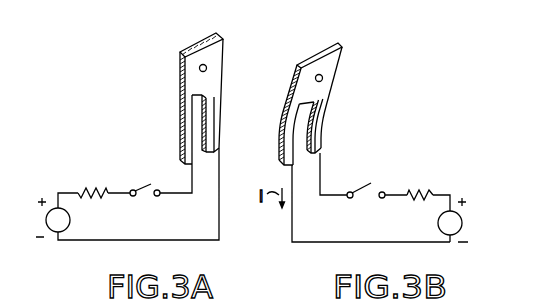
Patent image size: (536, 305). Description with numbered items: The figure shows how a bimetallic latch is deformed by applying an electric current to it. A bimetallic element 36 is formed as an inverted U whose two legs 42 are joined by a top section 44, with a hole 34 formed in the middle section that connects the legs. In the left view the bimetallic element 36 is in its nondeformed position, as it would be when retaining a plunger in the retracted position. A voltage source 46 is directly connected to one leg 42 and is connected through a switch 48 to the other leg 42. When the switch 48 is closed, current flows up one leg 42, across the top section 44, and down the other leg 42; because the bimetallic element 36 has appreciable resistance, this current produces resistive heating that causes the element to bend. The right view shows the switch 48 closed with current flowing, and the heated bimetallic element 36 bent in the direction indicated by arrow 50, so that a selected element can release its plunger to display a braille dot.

In FIG. 3A, the hole 34 is at (207, 68).
In FIG. 3B, the hole 34 is at (323, 78).
In FIG. 3A, the bimetallic element 36 is at (196, 90).
In FIG. 3B, the bimetallic element 36 is at (333, 82).
In FIG. 3A, the legs 42 is at (213, 90).
In FIG. 3B, the legs 42 is at (306, 132).
In FIG. 3A, the top section 44 is at (197, 41).
In FIG. 3A, the voltage source 46 is at (72, 220).
In FIG. 3B, the voltage source 46 is at (434, 222).
In FIG. 3A, the switch 48 is at (137, 188).
In FIG. 3B, the switch 48 is at (370, 188).
In FIG. 3B, the arrow 50 is at (344, 35).